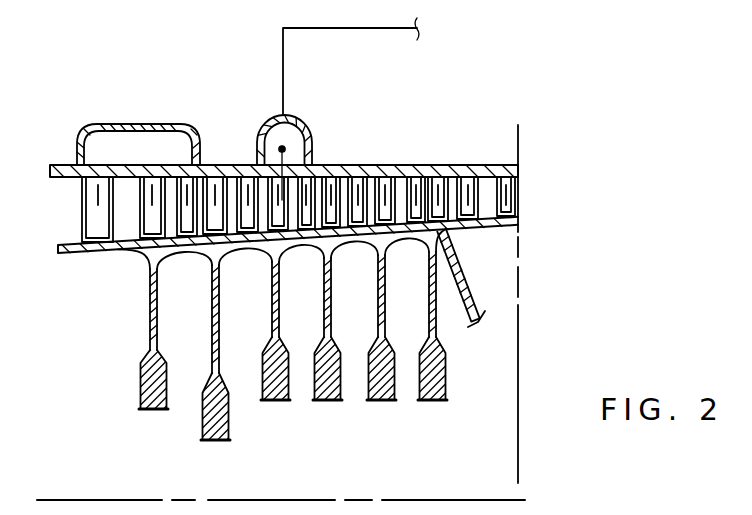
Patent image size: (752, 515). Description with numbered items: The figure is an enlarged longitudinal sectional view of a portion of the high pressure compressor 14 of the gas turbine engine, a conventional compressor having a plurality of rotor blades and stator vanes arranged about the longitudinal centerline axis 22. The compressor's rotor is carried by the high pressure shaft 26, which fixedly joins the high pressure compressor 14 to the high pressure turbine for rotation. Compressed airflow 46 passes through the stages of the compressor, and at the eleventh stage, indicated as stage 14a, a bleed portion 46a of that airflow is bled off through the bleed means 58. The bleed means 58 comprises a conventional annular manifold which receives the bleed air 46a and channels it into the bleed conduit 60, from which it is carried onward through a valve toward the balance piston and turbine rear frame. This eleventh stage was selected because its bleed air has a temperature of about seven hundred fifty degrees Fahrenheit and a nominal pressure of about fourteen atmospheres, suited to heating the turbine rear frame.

The high pressure compressor 14 is at (121, 282).
The eleventh stage 14a is at (270, 323).
The longitudinal centerline axis 22 is at (277, 500).
The high pressure shaft 26 is at (468, 287).
The compressed airflow 46 is at (143, 208).
The bleed portion 46a is at (282, 149).
The bleed means 58 is at (262, 118).
The bleed conduit 60 is at (351, 30).